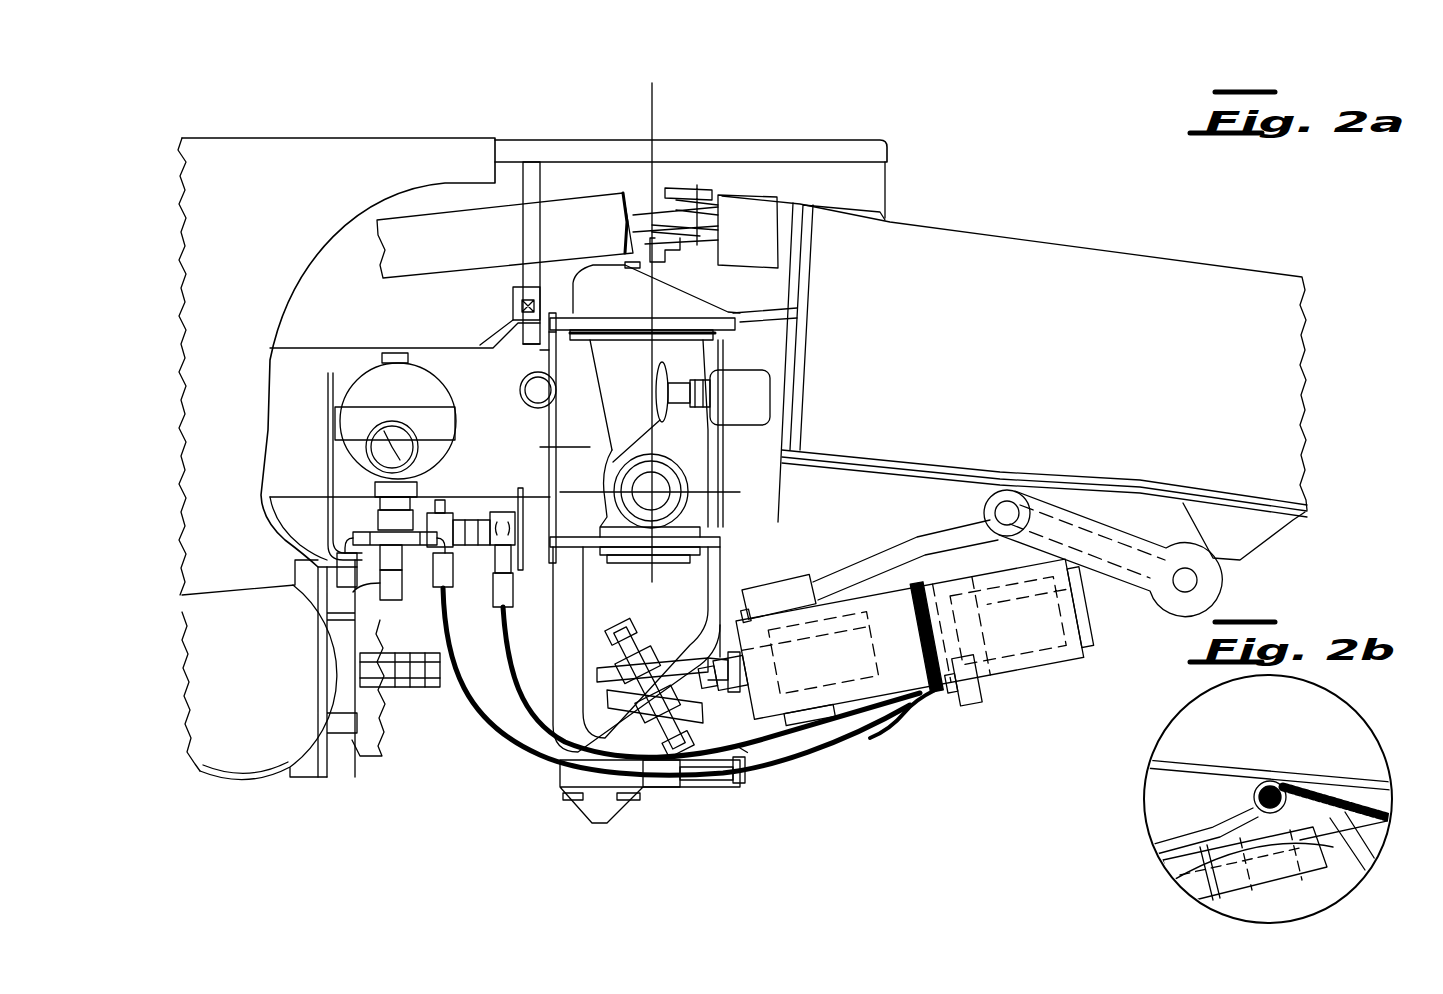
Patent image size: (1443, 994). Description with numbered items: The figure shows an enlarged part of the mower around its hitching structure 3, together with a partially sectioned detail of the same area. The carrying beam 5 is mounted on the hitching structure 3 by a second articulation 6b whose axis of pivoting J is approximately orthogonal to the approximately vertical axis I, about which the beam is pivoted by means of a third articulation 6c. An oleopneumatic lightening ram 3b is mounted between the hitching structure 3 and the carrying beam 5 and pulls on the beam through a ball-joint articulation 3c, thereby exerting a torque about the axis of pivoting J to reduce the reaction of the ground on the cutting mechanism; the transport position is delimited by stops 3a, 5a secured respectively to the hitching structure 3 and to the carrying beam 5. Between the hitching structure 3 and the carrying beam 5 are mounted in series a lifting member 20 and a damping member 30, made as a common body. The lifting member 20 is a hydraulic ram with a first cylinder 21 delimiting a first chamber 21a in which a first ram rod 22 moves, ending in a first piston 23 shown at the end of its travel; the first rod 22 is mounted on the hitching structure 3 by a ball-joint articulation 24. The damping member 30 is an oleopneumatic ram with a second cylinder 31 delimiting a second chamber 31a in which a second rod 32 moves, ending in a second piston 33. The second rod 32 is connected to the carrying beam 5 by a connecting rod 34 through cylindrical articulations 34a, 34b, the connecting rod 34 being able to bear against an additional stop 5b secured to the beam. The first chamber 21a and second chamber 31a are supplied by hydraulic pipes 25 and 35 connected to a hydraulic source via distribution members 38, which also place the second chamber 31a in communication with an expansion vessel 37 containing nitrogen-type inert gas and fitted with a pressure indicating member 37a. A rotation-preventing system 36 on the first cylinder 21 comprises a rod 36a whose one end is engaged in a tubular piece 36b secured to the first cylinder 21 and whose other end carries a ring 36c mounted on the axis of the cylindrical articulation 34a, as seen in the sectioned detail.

In FIG. 2A, the hitching structure 3 is at (305, 122).
In FIG. 2A, the stop 3a is at (522, 384).
In FIG. 2A, the lightening ram 3b is at (483, 268).
In FIG. 2A, the ball-joint articulation 3c is at (712, 186).
In FIG. 2A, the carrying beam 5 is at (1025, 238).
In FIG. 2B, the carrying beam 5 is at (1333, 763).
In FIG. 2A, the stop 5a is at (660, 393).
In FIG. 2A, the additional stop 5b is at (1182, 509).
In FIG. 2B, the additional stop 5b is at (1355, 800).
In FIG. 2A, the second articulation 6b is at (706, 486).
In FIG. 2A, the third articulation 6c is at (592, 405).
In FIG. 2A, the approximately vertical axis I is at (652, 104).
In FIG. 2A, the axis of pivoting J is at (655, 492).
In FIG. 2A, the lifting member 20 is at (848, 735).
In FIG. 2A, the first cylinder 21 is at (775, 722).
In FIG. 2A, the first chamber 21a is at (862, 712).
In FIG. 2A, the first ram rod 22 is at (815, 690).
In FIG. 2A, the first piston 23 is at (922, 665).
In FIG. 2A, the ball-joint articulation 24 is at (582, 790).
In FIG. 2A, the hydraulic pipe 25 is at (528, 716).
In FIG. 2A, the damping member 30 is at (1047, 682).
In FIG. 2A, the second cylinder 31 is at (1078, 655).
In FIG. 2B, the second cylinder 31 is at (1200, 888).
In FIG. 2A, the second chamber 31a is at (975, 705).
In FIG. 2A, the second rod 32 is at (1100, 622).
In FIG. 2A, the second piston 33 is at (1000, 662).
In FIG. 2A, the connecting rod 34 is at (1135, 480).
In FIG. 2B, the connecting rod 34 is at (1328, 822).
In FIG. 2A, the cylindrical articulation 34a is at (1010, 480).
In FIG. 2A, the cylindrical articulation 34b is at (1232, 588).
In FIG. 2A, the hydraulic pipe 35 is at (470, 710).
In FIG. 2A, the rotation-preventing system 36 is at (820, 562).
In FIG. 2A, the rod 36a is at (890, 565).
In FIG. 2B, the rod 36a is at (1200, 828).
In FIG. 2A, the tubular piece 36b is at (810, 581).
In FIG. 2B, the ring 36c is at (1277, 783).
In FIG. 2A, the expansion vessel 37 is at (353, 360).
In FIG. 2A, the pressure indicating member 37a is at (362, 450).
In FIG. 2A, the distribution members 38 is at (450, 497).